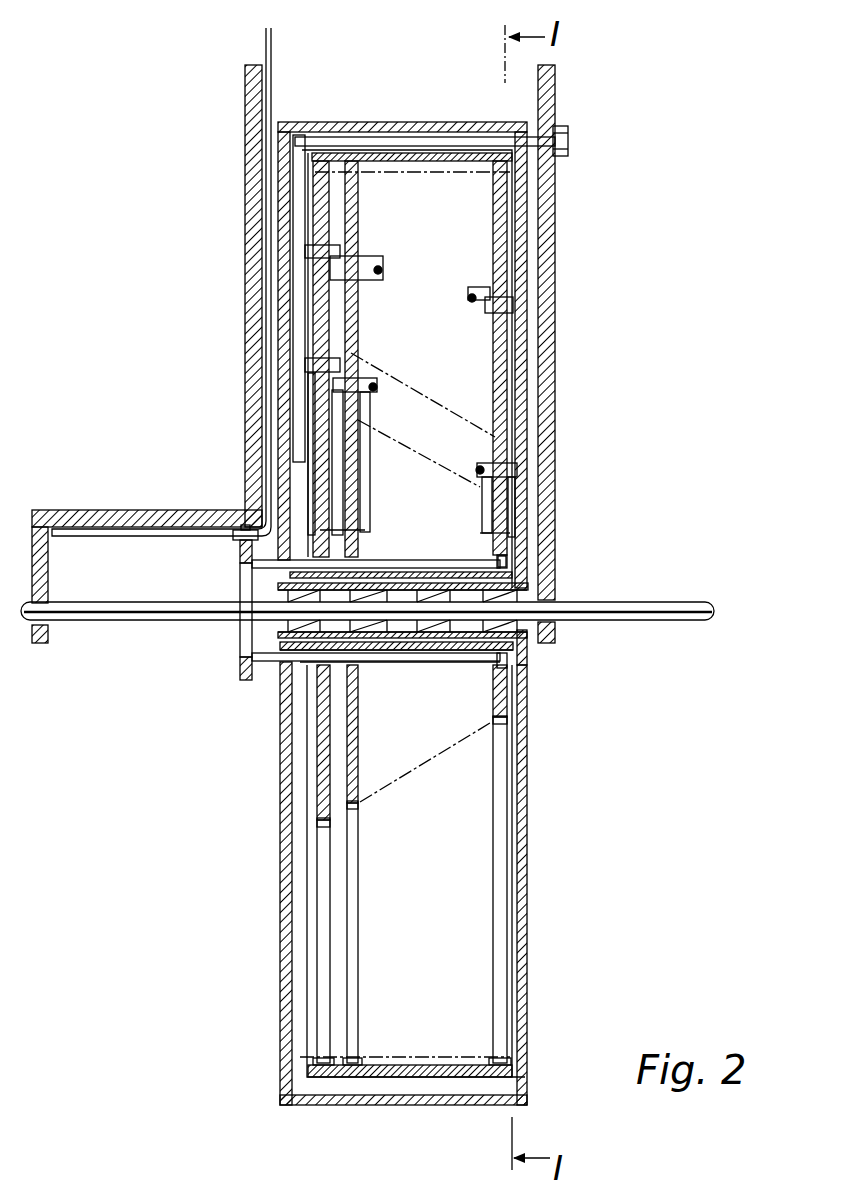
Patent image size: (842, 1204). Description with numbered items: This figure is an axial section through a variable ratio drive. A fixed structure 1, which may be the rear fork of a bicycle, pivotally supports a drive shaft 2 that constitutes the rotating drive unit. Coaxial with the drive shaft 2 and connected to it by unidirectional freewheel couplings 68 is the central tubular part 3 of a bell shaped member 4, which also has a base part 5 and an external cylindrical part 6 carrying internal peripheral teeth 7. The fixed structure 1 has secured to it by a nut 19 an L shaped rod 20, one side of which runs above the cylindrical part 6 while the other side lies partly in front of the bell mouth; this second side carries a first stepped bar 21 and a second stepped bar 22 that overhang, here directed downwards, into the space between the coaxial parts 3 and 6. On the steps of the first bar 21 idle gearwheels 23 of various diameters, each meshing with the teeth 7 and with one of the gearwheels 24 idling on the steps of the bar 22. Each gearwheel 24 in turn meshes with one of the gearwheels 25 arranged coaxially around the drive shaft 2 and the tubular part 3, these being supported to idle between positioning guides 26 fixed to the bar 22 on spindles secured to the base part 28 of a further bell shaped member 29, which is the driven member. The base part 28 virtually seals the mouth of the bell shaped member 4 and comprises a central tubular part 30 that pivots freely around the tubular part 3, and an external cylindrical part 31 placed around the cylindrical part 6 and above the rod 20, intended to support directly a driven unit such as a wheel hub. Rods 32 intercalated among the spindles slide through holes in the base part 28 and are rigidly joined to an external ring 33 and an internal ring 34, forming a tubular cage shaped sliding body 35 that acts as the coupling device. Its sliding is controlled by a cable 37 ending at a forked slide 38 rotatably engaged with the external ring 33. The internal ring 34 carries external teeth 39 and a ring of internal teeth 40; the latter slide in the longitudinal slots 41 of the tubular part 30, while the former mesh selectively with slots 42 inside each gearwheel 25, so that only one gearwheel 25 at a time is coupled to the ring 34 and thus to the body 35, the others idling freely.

The fixed structure 1 is at (258, 292).
The drive shaft 2 is at (658, 611).
The central tubular part 3 is at (408, 638).
The bell shaped member 4 is at (527, 855).
The base part 5 is at (528, 957).
The external cylindrical part 6 is at (450, 1077).
The internal peripheral teeth 7 is at (350, 165).
The nut 19 is at (567, 127).
The L shaped rod 20 is at (300, 183).
The first stepped bar 21 is at (383, 262).
The second stepped bar 22 is at (373, 390).
The gearwheels 23 is at (358, 310).
The gearwheels 24 is at (355, 350).
The gearwheels 25 is at (525, 522).
The positioning guides 26 is at (365, 475).
The base part 28 is at (287, 1020).
The bell shaped member 29 is at (277, 943).
The central tubular part 30 is at (366, 533).
The external cylindrical part 31 is at (400, 1093).
The rods 32 is at (245, 708).
The external ring 33 is at (240, 562).
The internal ring 34 is at (522, 660).
The cage shaped sliding body 35 is at (435, 667).
The cable 37 is at (115, 538).
The forked slide 38 is at (233, 540).
The external teeth 39 is at (507, 557).
The internal teeth 40 is at (475, 535).
The longitudinal slots 41 is at (372, 662).
The slots 42 is at (383, 653).
The unidirectional freewheel couplings 68 is at (453, 625).